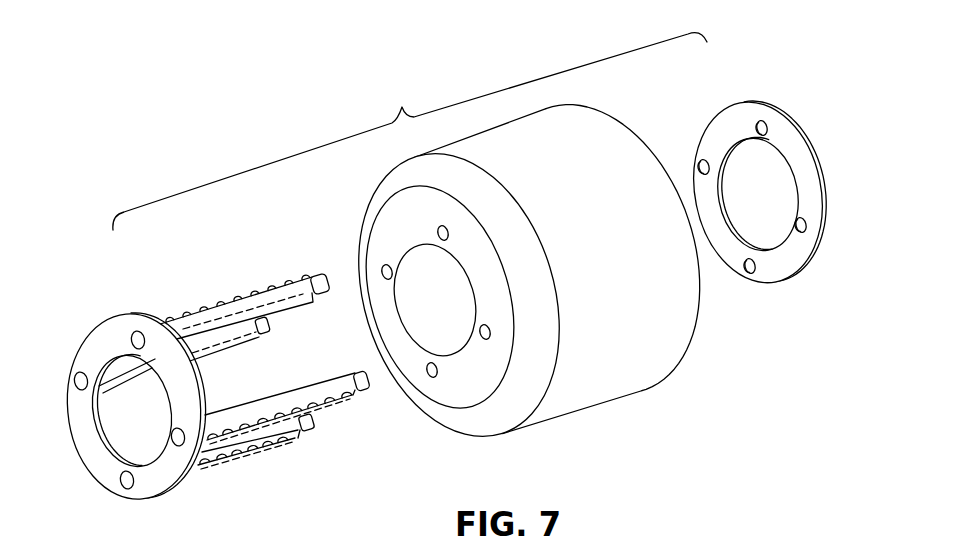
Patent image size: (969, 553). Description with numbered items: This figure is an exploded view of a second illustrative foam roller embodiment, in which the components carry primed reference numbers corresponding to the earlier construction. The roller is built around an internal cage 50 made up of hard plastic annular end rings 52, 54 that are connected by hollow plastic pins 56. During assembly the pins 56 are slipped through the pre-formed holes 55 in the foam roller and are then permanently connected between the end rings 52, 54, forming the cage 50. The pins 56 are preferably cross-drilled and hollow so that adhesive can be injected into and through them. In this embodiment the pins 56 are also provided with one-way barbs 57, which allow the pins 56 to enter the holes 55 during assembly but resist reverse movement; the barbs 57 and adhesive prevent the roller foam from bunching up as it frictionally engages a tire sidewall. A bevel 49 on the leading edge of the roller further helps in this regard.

The bevel 49 is at (550, 308).
The internal cage 50 is at (215, 394).
The annular end ring 52 is at (153, 480).
The annular end ring 54 is at (788, 270).
The pre-formed holes 55 is at (384, 266).
The pins 56 is at (267, 284).
The one-way barbs 57 is at (236, 458).